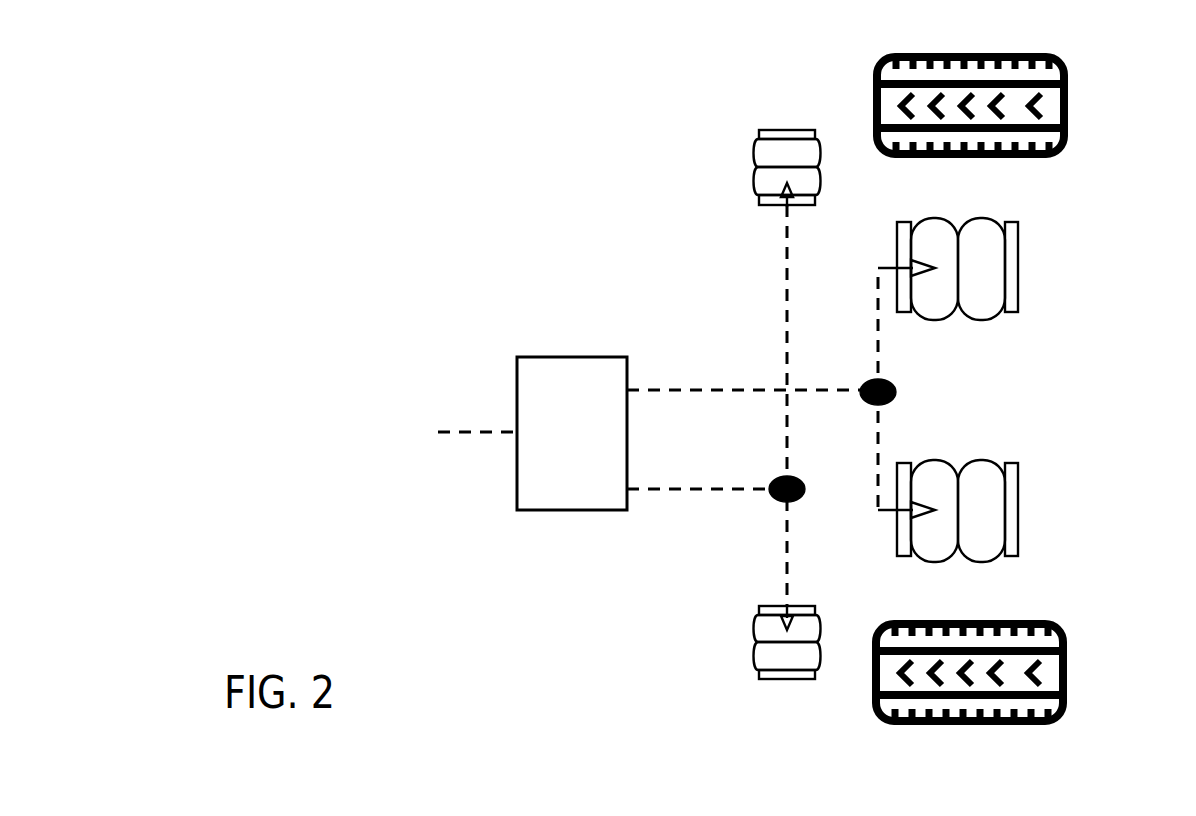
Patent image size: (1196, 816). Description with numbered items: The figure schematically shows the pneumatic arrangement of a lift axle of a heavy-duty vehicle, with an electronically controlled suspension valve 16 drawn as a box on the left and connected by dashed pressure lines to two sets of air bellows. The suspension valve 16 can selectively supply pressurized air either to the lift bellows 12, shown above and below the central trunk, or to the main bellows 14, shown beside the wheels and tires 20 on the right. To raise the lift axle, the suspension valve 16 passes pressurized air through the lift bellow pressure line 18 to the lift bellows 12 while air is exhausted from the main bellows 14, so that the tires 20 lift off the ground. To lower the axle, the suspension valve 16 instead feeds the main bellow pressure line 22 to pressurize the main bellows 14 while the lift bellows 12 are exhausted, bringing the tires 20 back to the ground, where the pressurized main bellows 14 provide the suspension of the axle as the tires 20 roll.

The lift bellows 12 is at (777, 130).
The main bellows 14 is at (1018, 252).
The suspension valve 16 is at (568, 357).
The lift bellow pressure line 18 is at (692, 490).
The tires 20 is at (1068, 93).
The main bellow pressure line 22 is at (703, 390).